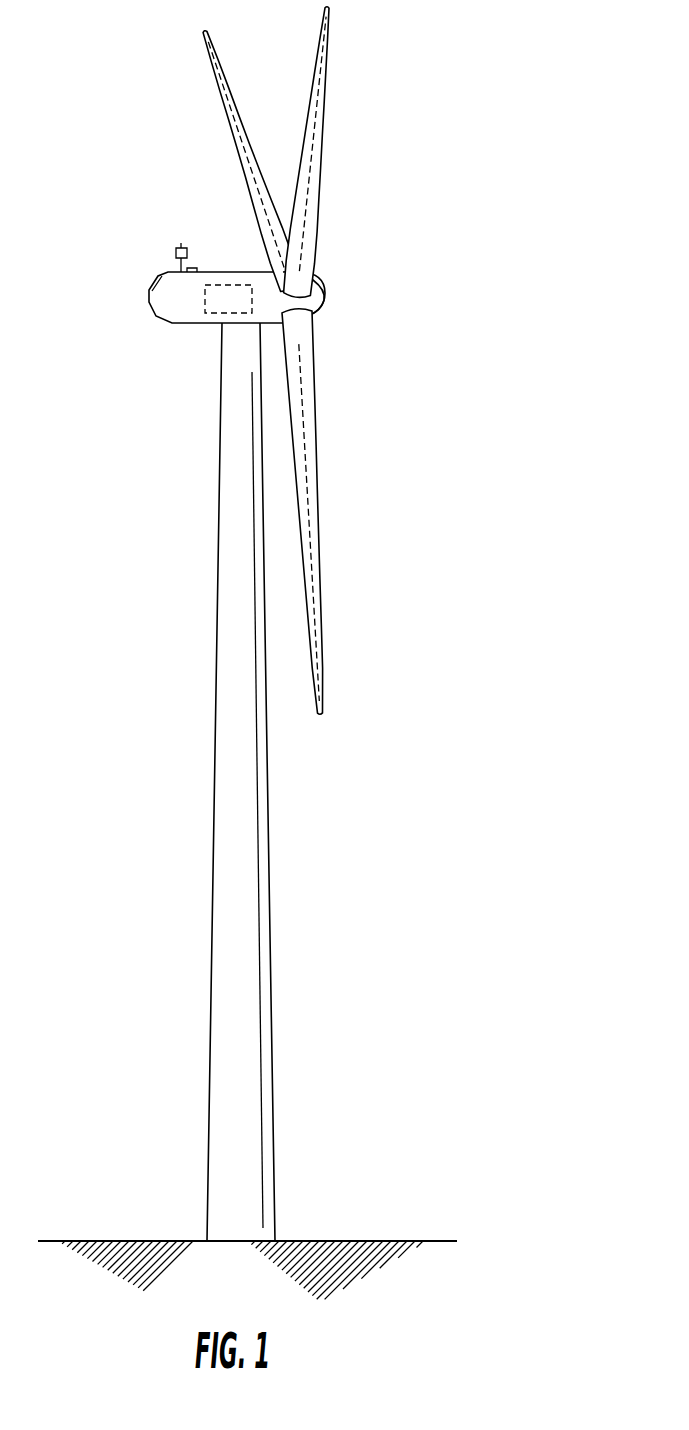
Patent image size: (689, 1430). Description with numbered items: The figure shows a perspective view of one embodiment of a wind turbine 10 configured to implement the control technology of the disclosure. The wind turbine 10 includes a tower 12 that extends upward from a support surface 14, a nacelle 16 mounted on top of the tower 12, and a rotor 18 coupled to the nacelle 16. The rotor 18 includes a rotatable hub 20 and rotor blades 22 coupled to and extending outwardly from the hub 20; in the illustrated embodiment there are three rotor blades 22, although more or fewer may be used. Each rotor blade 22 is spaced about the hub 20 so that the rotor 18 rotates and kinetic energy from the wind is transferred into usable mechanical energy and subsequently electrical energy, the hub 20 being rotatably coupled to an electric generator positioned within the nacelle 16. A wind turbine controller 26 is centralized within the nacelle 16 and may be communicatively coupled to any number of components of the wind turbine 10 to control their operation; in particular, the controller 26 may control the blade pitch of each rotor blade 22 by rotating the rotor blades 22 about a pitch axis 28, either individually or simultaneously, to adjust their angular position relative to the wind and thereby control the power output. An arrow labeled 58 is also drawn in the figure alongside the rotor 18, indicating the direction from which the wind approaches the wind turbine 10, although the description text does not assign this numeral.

The wind turbine 10 is at (432, 98).
The tower 12 is at (226, 906).
The support surface 14 is at (125, 1240).
The nacelle 16 is at (193, 326).
The rotor 18 is at (332, 270).
The rotatable hub 20 is at (322, 302).
The rotor blade 22 is at (250, 134).
The wind turbine controller 26 is at (228, 284).
The pitch axis 28 is at (242, 152).
The wind direction 58 is at (462, 155).